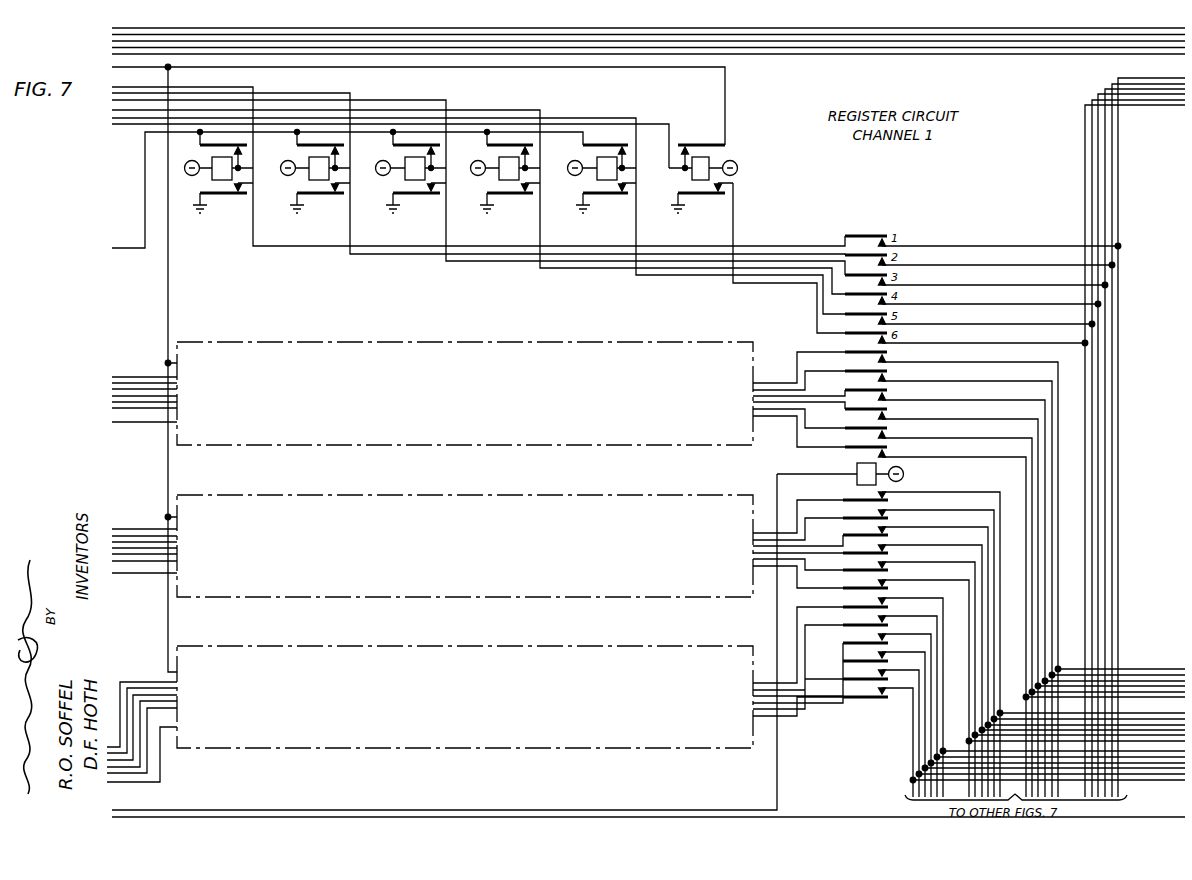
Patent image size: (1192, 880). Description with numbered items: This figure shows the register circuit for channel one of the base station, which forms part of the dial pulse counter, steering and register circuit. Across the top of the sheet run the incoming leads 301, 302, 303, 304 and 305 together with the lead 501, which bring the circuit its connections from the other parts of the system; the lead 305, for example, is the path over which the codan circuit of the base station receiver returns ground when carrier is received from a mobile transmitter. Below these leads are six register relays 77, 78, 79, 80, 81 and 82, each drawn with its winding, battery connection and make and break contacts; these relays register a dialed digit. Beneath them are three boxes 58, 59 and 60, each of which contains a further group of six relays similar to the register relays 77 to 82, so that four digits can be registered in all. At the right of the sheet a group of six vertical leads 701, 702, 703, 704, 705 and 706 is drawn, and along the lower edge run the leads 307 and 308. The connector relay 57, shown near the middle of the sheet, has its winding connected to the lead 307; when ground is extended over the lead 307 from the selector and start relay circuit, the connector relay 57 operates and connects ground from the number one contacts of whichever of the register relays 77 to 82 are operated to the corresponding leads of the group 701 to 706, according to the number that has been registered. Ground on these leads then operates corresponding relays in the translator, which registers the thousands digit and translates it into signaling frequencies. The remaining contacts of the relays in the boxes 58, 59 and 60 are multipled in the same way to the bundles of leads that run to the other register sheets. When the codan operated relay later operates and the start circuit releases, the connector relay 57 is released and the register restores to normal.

The register control conductor 301 is at (904, 55).
The register control conductor 302 is at (944, 55).
The register control conductor 303 is at (985, 55).
The register control conductor 304 is at (1029, 55).
The lead 305 is at (1073, 55).
The register input conductor 501 is at (116, 70).
The connector relay 57 is at (857, 470).
The box containing a group of six relays 58 is at (448, 349).
The box containing a group of six relays 59 is at (448, 501).
The box containing a group of six relays 60 is at (448, 653).
The register relay 77 is at (208, 181).
The register relay 78 is at (305, 181).
The register relay 79 is at (401, 181).
The register relay 80 is at (495, 181).
The register relay 81 is at (591, 181).
The register relay 82 is at (686, 181).
The lead 307 is at (777, 803).
The common conductor 308 is at (1174, 825).
The lead 701 is at (1118, 132).
The lead 702 is at (1112, 150).
The lead 703 is at (1105, 167).
The lead 704 is at (1098, 185).
The lead 705 is at (1092, 202).
The lead 706 is at (1085, 219).